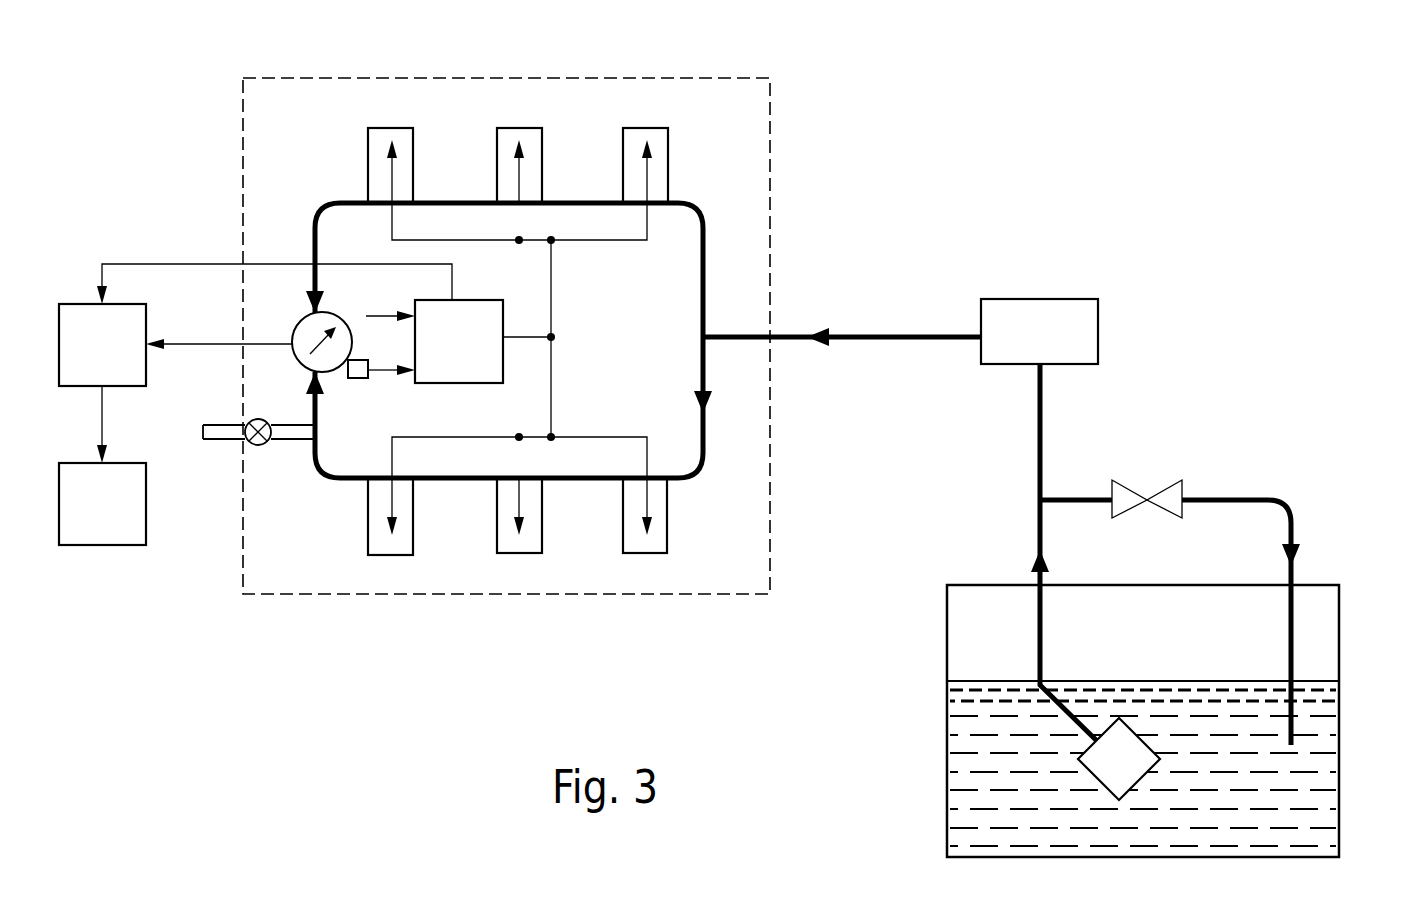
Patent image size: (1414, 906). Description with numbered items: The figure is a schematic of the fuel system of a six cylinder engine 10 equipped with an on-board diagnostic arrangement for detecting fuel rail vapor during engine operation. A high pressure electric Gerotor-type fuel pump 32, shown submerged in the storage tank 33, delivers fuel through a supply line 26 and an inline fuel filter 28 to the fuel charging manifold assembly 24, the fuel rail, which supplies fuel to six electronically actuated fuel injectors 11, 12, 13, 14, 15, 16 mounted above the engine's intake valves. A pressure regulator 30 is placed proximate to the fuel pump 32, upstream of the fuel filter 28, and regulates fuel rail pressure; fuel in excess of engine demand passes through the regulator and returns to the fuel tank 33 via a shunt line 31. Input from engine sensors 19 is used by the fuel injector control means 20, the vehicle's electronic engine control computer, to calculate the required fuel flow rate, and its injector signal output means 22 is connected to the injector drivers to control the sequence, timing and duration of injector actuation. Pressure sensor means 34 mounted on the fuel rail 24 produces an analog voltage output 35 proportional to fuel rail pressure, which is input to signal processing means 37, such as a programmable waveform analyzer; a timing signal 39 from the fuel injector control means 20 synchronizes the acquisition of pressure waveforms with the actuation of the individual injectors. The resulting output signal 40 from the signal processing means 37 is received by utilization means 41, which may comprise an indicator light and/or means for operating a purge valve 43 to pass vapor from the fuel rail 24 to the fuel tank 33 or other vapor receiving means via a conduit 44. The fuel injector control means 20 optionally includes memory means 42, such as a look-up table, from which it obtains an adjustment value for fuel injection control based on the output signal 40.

The six cylinder engine 10 is at (770, 167).
The fuel injector 11 is at (668, 128).
The fuel injector 12 is at (542, 140).
The fuel injector 13 is at (413, 140).
The fuel injector 14 is at (368, 512).
The fuel injector 15 is at (542, 540).
The fuel injector 16 is at (667, 535).
The engine sensors 19 is at (366, 316).
The fuel injector control means 20 is at (459, 341).
The injector signal output means 22 is at (551, 322).
The fuel charging manifold assembly 24 is at (705, 235).
The supply conduit 26 is at (830, 335).
The inline fuel filter 28 is at (1098, 305).
The pressure regulator 30 is at (1128, 480).
The shunt line 31 is at (1240, 498).
The fuel pump 32 is at (1119, 759).
The storage tank 33 is at (1339, 681).
The pressure sensor means 34 is at (300, 316).
The analog voltage output 35 is at (180, 344).
The signal processing means 37 is at (102, 345).
The timing signal 39 is at (135, 264).
The output signal 40 is at (102, 428).
The utilization means 41 is at (102, 504).
The memory means 42 is at (352, 378).
The purge valve 43 is at (262, 445).
The conduit 44 is at (210, 440).